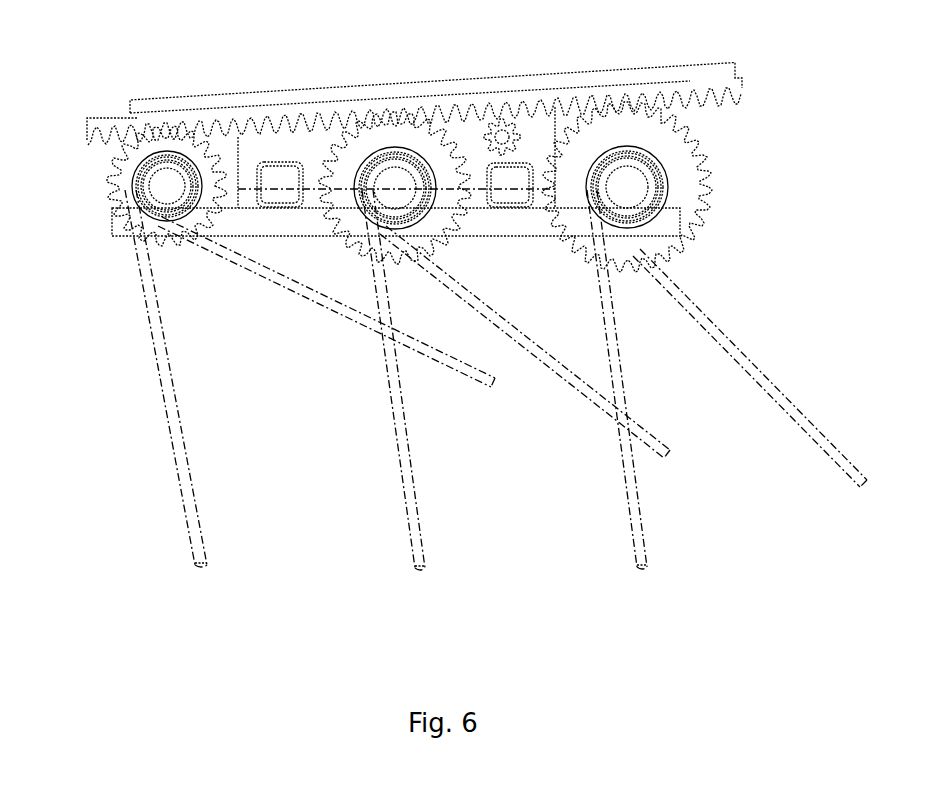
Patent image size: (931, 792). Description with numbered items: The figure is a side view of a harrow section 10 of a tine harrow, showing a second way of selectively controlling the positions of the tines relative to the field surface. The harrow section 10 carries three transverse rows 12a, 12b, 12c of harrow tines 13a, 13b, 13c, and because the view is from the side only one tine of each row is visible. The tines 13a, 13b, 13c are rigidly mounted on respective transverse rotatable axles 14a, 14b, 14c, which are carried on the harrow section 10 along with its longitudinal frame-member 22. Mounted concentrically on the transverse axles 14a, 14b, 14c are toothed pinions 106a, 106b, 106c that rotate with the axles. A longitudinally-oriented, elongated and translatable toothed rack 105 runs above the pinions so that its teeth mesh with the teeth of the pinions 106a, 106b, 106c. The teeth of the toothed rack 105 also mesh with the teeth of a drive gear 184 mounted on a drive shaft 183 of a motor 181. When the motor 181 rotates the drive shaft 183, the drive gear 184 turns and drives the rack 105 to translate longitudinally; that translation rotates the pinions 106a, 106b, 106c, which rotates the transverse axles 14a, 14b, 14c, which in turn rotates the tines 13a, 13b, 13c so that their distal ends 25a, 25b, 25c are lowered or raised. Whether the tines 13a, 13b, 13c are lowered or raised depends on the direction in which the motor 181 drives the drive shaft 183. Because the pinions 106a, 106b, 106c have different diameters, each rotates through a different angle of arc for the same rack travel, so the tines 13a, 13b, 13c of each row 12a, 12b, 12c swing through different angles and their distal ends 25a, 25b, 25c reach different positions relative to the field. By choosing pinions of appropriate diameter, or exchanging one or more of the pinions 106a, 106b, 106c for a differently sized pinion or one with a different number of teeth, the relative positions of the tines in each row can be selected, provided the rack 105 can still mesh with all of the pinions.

The harrow section 10 is at (758, 277).
The first transverse row 12a is at (632, 190).
The second transverse row 12b is at (398, 195).
The third transverse row 12c is at (162, 193).
The harrow tine 13a is at (617, 363).
The harrow tine 13b is at (397, 388).
The harrow tine 13c is at (167, 370).
The transverse rotatable axle 14a is at (653, 183).
The transverse rotatable axle 14b is at (430, 185).
The transverse rotatable axle 14c is at (142, 190).
The longitudinal frame-member 22 is at (673, 223).
The distal end 25a is at (643, 568).
The distal end 25b is at (420, 568).
The distal end 25c is at (202, 566).
The toothed rack 105 is at (683, 72).
The toothed pinion 106a is at (677, 147).
The toothed pinion 106b is at (377, 140).
The toothed pinion 106c is at (137, 150).
The motor 181 is at (273, 152).
The drive shaft 183 is at (502, 137).
The drive gear 184 is at (523, 130).